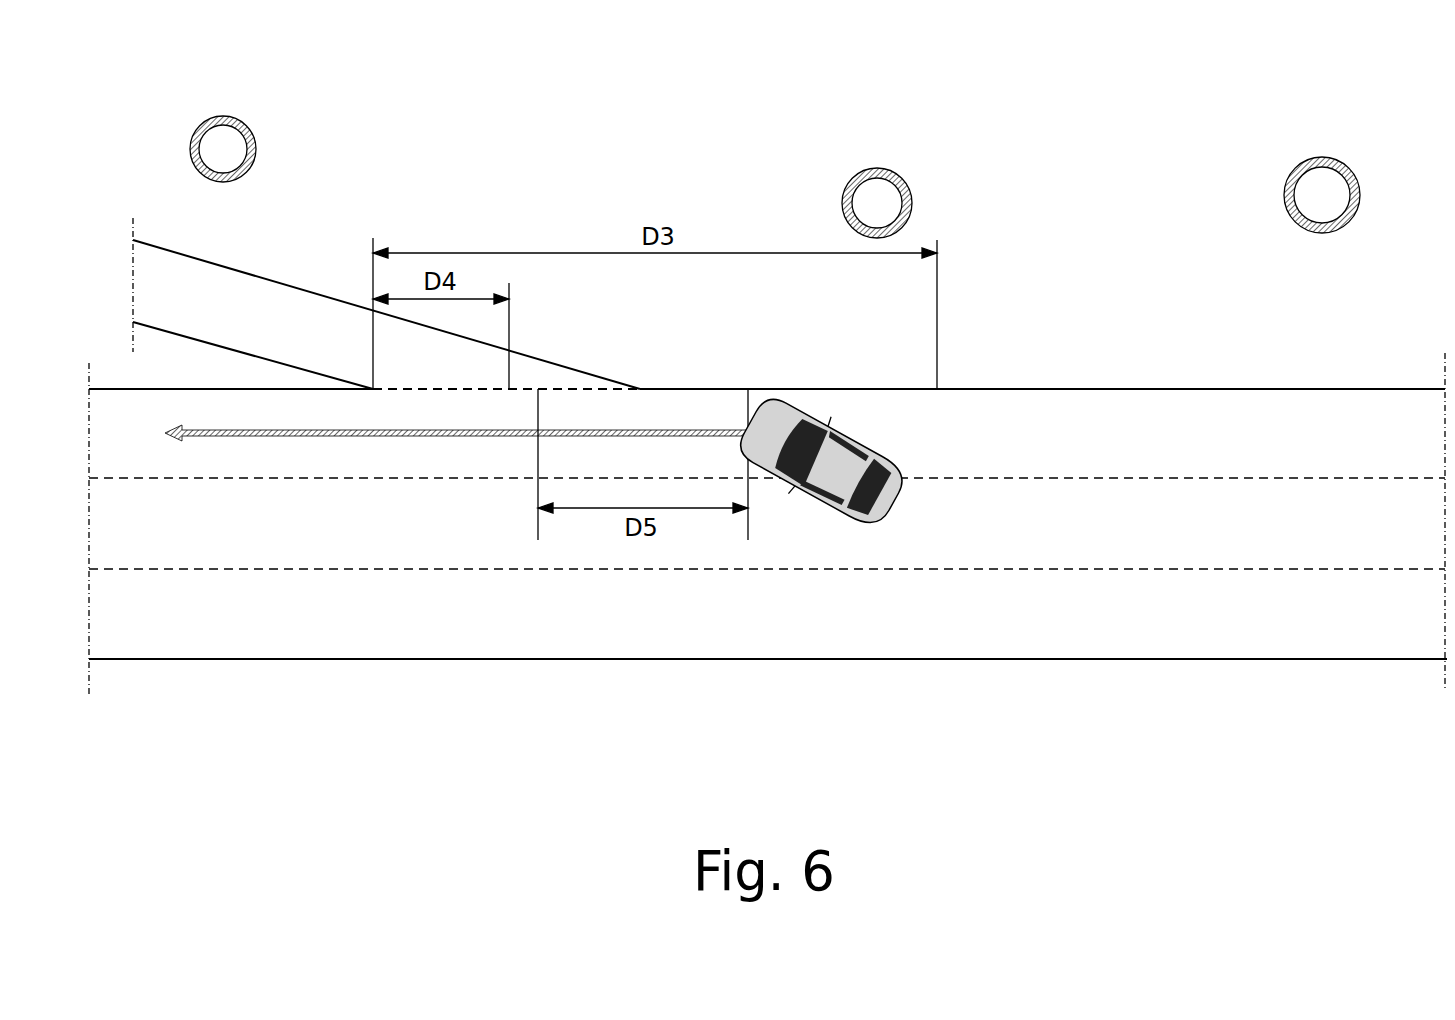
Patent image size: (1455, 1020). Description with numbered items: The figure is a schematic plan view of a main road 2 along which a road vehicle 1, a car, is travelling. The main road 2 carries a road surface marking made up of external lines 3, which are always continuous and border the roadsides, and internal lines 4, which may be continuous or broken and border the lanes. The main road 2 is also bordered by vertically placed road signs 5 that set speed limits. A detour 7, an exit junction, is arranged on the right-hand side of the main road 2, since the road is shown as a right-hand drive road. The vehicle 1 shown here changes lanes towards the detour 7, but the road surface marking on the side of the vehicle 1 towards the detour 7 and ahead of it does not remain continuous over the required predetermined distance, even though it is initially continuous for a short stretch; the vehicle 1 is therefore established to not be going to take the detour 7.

The road vehicle 1 is at (845, 470).
The main road 2 is at (418, 722).
The external lines 3 is at (160, 240).
The internal lines 4 is at (118, 478).
The road signs 5 is at (222, 115).
The detour 7 is at (322, 228).